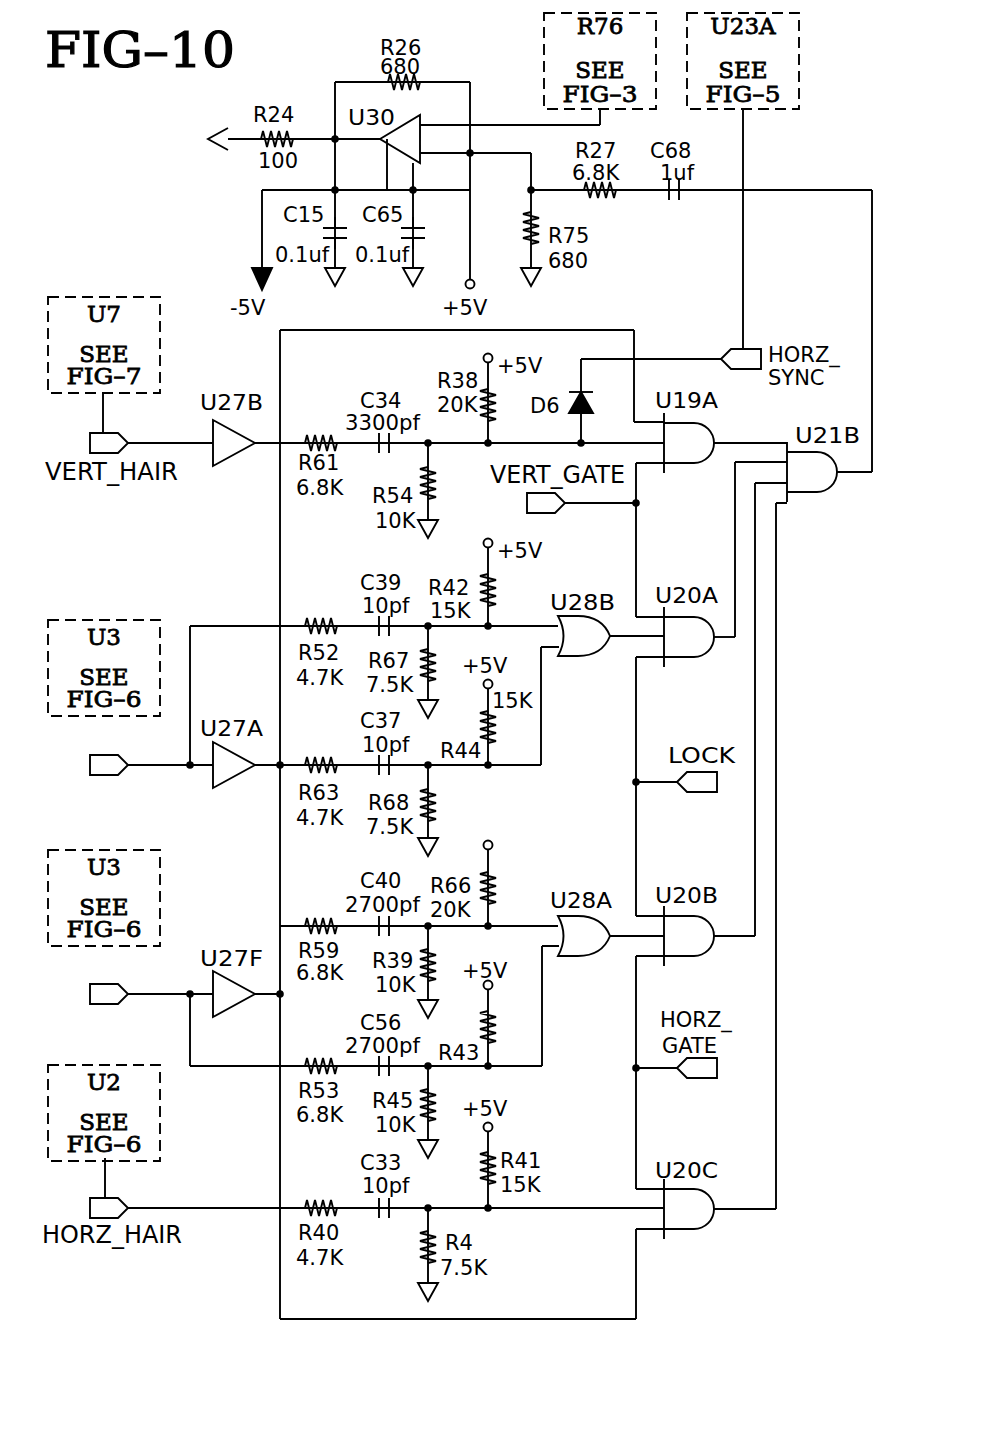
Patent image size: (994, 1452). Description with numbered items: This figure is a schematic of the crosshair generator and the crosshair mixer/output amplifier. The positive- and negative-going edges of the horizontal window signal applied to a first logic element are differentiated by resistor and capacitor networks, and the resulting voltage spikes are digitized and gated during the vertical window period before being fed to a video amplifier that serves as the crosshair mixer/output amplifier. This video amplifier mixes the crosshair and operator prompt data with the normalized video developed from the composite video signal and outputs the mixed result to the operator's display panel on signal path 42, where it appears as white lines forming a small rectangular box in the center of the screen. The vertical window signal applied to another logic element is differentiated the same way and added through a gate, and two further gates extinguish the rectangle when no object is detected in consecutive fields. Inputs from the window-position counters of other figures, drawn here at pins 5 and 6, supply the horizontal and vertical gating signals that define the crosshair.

The signal path 42 is at (220, 148).
The U3 pin 5 HORZ_GATE input 5 is at (105, 715).
The U3 pin 6 VERT_GATE input 6 is at (105, 945).